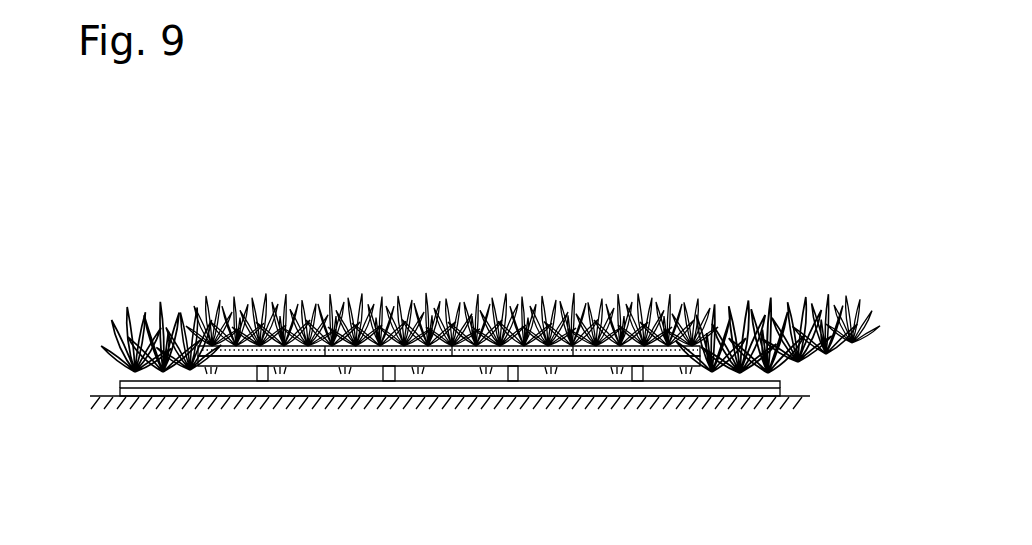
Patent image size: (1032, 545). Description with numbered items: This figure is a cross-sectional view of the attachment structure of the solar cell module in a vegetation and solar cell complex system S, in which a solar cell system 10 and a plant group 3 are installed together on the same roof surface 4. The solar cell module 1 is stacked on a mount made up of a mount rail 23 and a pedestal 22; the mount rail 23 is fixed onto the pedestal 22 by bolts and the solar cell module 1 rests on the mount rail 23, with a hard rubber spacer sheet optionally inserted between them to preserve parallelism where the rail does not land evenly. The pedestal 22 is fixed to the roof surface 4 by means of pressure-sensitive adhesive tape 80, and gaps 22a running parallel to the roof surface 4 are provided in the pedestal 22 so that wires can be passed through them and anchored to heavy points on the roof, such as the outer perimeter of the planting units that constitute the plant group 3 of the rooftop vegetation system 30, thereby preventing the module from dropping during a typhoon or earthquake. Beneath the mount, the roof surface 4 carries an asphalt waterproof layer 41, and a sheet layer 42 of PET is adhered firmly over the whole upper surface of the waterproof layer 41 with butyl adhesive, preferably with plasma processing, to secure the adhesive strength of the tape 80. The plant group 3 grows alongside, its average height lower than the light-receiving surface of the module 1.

The vegetation and solar cell complex system S is at (748, 175).
The solar cell module 1 is at (350, 312).
The plant group 3 is at (763, 303).
The roof surface 4 is at (806, 396).
The solar cell system 10 is at (594, 368).
The pedestal 22 is at (378, 382).
The gap 22a is at (633, 382).
The mount rail 23 is at (661, 362).
The rooftop vegetation system 30 is at (820, 290).
The asphalt waterproof layer 41 is at (126, 381).
The sheet layer 42 is at (140, 397).
The pressure-sensitive adhesive tape 80 is at (390, 382).